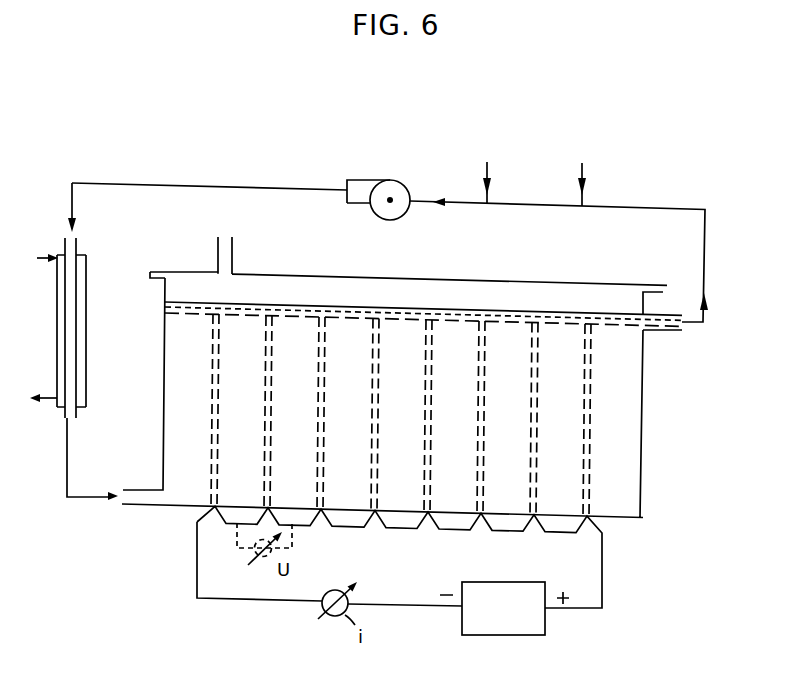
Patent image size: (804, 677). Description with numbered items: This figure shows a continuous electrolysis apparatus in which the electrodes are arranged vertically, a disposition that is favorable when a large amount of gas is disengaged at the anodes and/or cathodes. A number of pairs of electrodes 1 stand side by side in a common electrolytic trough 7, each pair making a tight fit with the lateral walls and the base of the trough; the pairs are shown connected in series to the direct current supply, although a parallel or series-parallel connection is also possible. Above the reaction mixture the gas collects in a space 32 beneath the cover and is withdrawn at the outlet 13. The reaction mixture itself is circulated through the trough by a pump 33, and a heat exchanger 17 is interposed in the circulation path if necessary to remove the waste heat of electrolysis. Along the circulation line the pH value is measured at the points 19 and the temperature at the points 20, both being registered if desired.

The pairs of electrodes 1 is at (268, 403).
The electrolytic trough 7 is at (642, 428).
The gas outlet 13 is at (218, 247).
The heat exchanger 17 is at (74, 330).
The pH measuring points 19 is at (582, 163).
The temperature measuring points 20 is at (487, 162).
The gas space 32 is at (518, 293).
The pump 33 is at (385, 192).